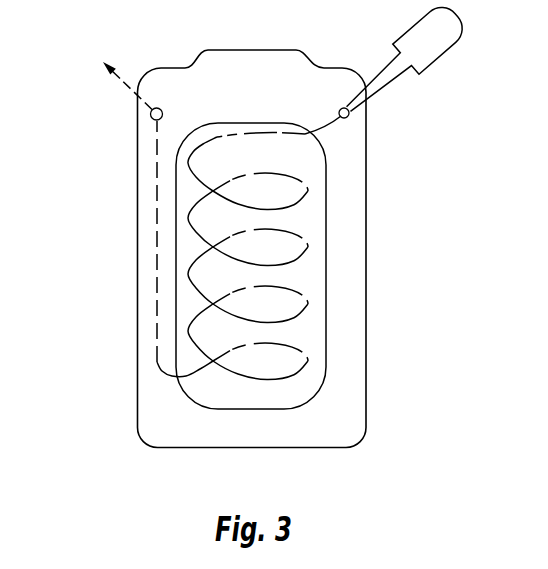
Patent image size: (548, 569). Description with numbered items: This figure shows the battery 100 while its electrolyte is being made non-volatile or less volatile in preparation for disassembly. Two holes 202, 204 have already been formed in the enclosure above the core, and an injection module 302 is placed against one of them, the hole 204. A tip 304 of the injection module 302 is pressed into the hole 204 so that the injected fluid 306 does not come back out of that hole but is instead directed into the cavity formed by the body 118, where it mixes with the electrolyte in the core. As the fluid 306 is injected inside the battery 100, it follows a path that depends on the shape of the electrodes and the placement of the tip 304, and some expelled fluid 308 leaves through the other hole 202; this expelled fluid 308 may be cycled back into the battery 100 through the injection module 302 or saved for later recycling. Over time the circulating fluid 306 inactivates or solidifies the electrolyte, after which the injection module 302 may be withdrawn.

The battery 100 is at (227, 249).
The body 118 is at (367, 381).
The hole 202 is at (151, 120).
The hole 204 is at (349, 119).
The injection module 302 is at (450, 53).
The tip 304 is at (345, 107).
The fluid 306 is at (312, 247).
The expelled fluid 308 is at (128, 79).